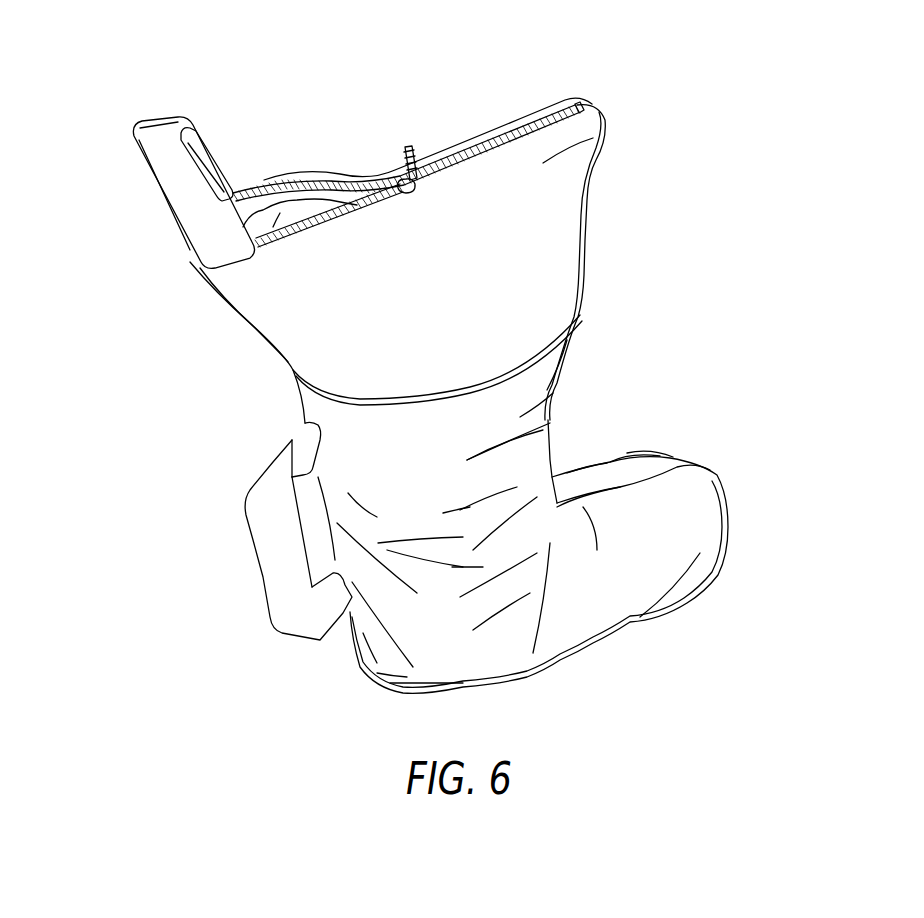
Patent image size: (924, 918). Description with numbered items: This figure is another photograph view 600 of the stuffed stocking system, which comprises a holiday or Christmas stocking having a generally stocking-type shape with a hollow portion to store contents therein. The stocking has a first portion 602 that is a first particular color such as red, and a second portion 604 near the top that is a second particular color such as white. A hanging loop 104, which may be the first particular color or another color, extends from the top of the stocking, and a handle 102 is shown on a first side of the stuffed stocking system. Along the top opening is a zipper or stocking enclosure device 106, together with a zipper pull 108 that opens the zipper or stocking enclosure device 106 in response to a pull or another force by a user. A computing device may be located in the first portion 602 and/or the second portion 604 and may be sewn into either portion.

The photograph view 600 is at (825, 92).
The handle 102 is at (255, 547).
The hanging loop 104 is at (200, 132).
The zipper or stocking enclosure device 106 is at (581, 103).
The zipper pull 108 is at (413, 147).
The first portion 602 is at (707, 475).
The second portion 604 is at (590, 212).